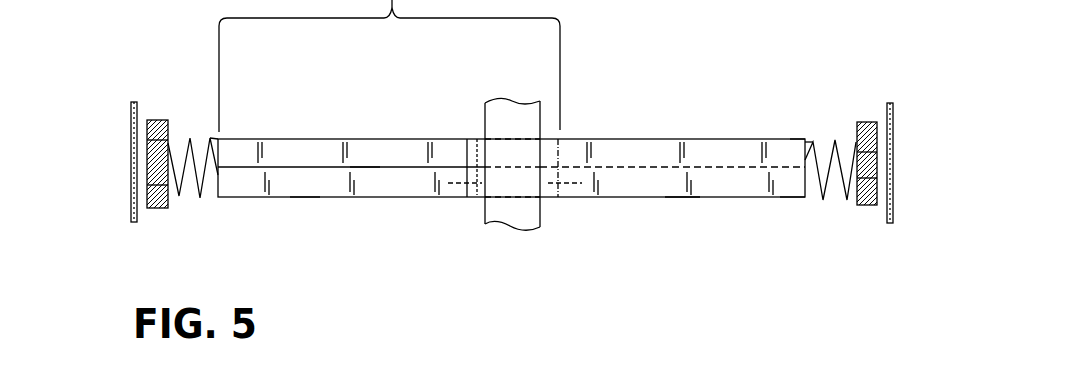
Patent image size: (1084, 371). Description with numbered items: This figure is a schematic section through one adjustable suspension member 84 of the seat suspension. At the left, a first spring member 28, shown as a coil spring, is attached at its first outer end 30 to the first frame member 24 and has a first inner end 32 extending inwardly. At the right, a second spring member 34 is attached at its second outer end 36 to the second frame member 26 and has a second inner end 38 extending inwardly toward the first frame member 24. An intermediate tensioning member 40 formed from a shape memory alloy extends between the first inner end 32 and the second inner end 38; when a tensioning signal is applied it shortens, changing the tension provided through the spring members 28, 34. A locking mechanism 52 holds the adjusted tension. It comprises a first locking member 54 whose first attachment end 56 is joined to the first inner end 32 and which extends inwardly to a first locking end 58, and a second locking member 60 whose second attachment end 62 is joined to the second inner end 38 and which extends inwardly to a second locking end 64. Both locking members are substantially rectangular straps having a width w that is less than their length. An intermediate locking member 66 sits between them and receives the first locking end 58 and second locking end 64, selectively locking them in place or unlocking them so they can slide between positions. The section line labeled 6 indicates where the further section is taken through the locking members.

The first frame member 24 is at (160, 184).
The second frame member 26 is at (875, 153).
The first spring member 28 is at (200, 204).
The first outer end 30 is at (168, 157).
The first inner end 32 is at (214, 139).
The second spring member 34 is at (845, 204).
The second outer end 36 is at (853, 177).
The second inner end 38 is at (806, 150).
The intermediate tensioning member 40 is at (365, 170).
The locking mechanism 52 is at (455, 139).
The first locking member 54 is at (305, 199).
The first attachment end 56 is at (233, 139).
The first locking end 58 is at (557, 160).
The second locking member 60 is at (682, 199).
The second attachment end 62 is at (804, 139).
The second locking end 64 is at (470, 153).
The intermediate locking member 66 is at (505, 229).
The adjustable suspension member 84 is at (793, 199).
The section line 6 is at (451, 186).
The width w is at (736, 230).